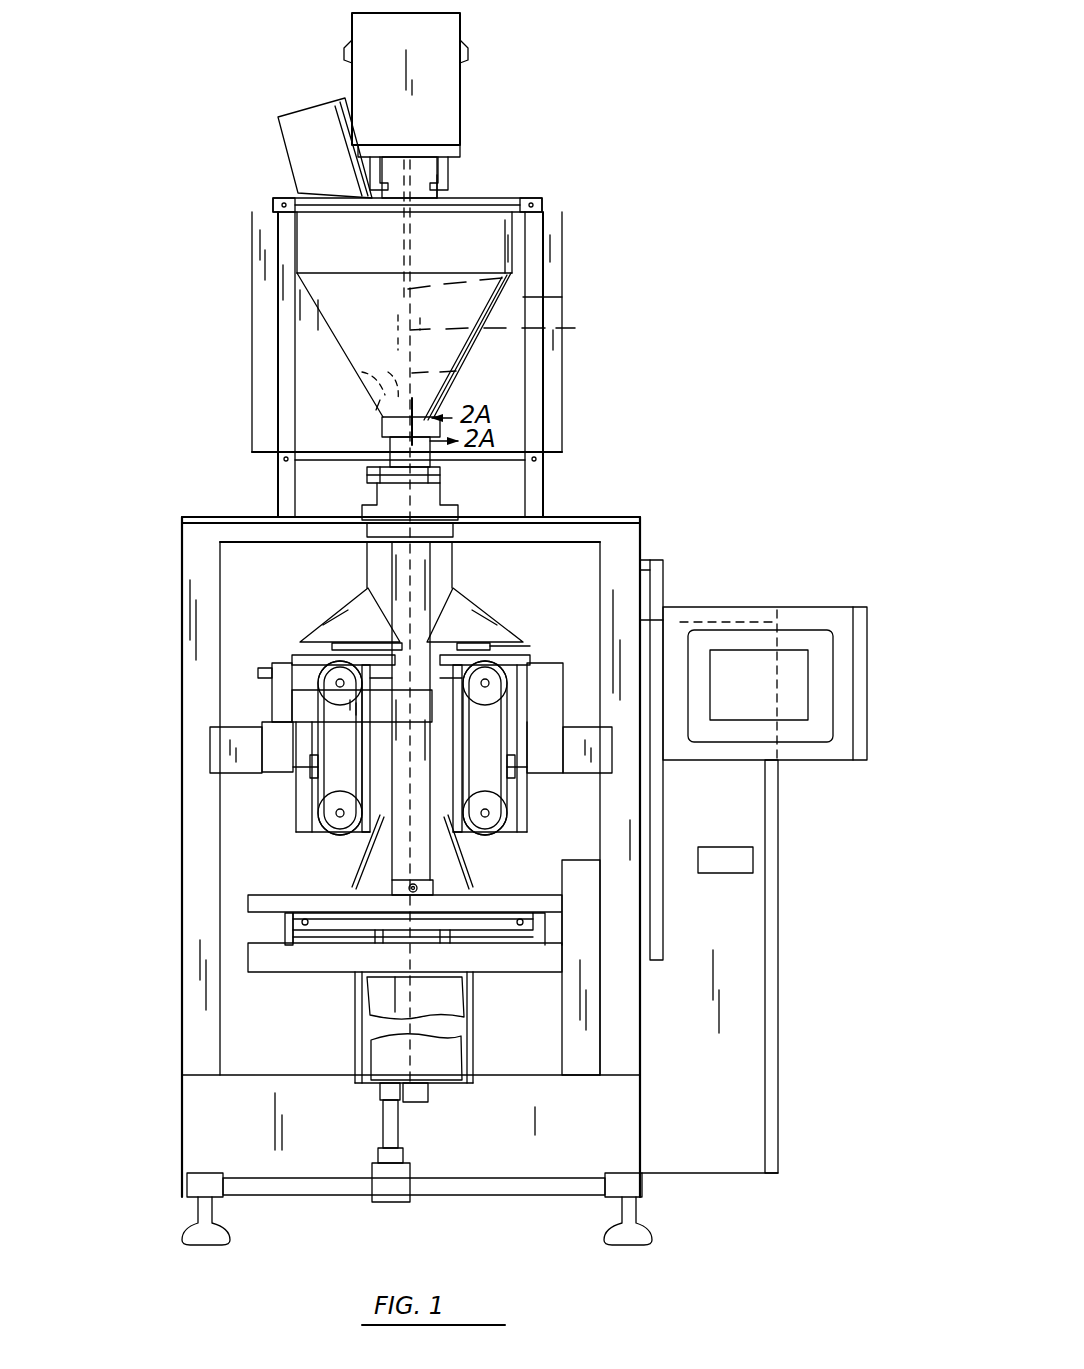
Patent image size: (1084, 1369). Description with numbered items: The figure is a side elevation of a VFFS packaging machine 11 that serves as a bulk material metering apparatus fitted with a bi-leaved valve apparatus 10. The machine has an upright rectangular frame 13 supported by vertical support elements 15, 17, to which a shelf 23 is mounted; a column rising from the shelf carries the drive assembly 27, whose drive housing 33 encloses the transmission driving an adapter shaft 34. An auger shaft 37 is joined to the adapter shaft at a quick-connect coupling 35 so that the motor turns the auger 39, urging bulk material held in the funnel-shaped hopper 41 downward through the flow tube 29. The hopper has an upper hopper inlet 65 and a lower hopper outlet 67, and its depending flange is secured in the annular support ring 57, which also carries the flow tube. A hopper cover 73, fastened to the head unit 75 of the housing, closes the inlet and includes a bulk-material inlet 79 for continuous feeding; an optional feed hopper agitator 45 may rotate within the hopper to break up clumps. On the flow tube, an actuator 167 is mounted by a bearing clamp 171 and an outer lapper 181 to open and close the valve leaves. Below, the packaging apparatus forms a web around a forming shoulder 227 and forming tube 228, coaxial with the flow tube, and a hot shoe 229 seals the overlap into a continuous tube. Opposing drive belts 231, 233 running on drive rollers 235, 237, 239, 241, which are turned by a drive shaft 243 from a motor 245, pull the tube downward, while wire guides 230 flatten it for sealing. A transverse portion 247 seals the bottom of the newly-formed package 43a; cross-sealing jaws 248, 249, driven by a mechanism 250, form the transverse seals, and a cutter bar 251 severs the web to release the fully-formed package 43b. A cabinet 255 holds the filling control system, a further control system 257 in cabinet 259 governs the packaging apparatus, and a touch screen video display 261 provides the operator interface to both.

The bi-leaved valve apparatus 10 is at (160, 728).
The VFFS packaging machine 11 is at (218, 405).
The frame 13 is at (222, 1124).
The support element 15 is at (196, 1040).
The support element 17 is at (636, 1049).
The shelf 23 is at (182, 523).
The drive assembly 27 is at (322, 33).
The flow tube 29 is at (390, 450).
The drive housing 33 is at (430, 44).
The adapter shaft 34 is at (540, 272).
The coupling 35 is at (560, 329).
The auger shaft 37 is at (440, 371).
The auger 39 is at (445, 580).
The hopper 41 is at (500, 300).
The feed hopper agitator 45 is at (480, 395).
The annular support ring 57 is at (380, 431).
The upper hopper inlet 65 is at (332, 216).
The lower hopper outlet 67 is at (362, 372).
The hopper cover 73 is at (300, 196).
The head unit 75 is at (439, 190).
The bulk-material inlet 79 is at (290, 123).
The actuator 167 is at (367, 481).
The bearing clamp 171 is at (442, 470).
The outer lapper 181 is at (443, 480).
The forming shoulder 227 is at (490, 640).
The forming tube 228 is at (372, 822).
The hot shoe 229 is at (440, 650).
The wire guides 230 is at (352, 872).
The drive belt 231 is at (322, 800).
The drive belt 233 is at (510, 800).
The drive roller 235 is at (292, 678).
The drive roller 237 is at (332, 820).
The drive roller 239 is at (490, 684).
The drive roller 241 is at (492, 813).
The drive shaft 243 is at (298, 780).
The motor 245 is at (210, 751).
The transverse portion 247 is at (375, 1025).
The cross-sealing jaw 248 is at (300, 912).
The cross-sealing jaw 249 is at (300, 932).
The mechanism 250 is at (600, 940).
The cutter bar 251 is at (330, 935).
The cabinet 255 is at (258, 346).
The control system 257 is at (732, 896).
The cabinet 259 is at (740, 1108).
The touch screen video display 261 is at (800, 686).
The newly-formed package 43a is at (430, 1001).
The fully-formed package 43b is at (453, 1082).